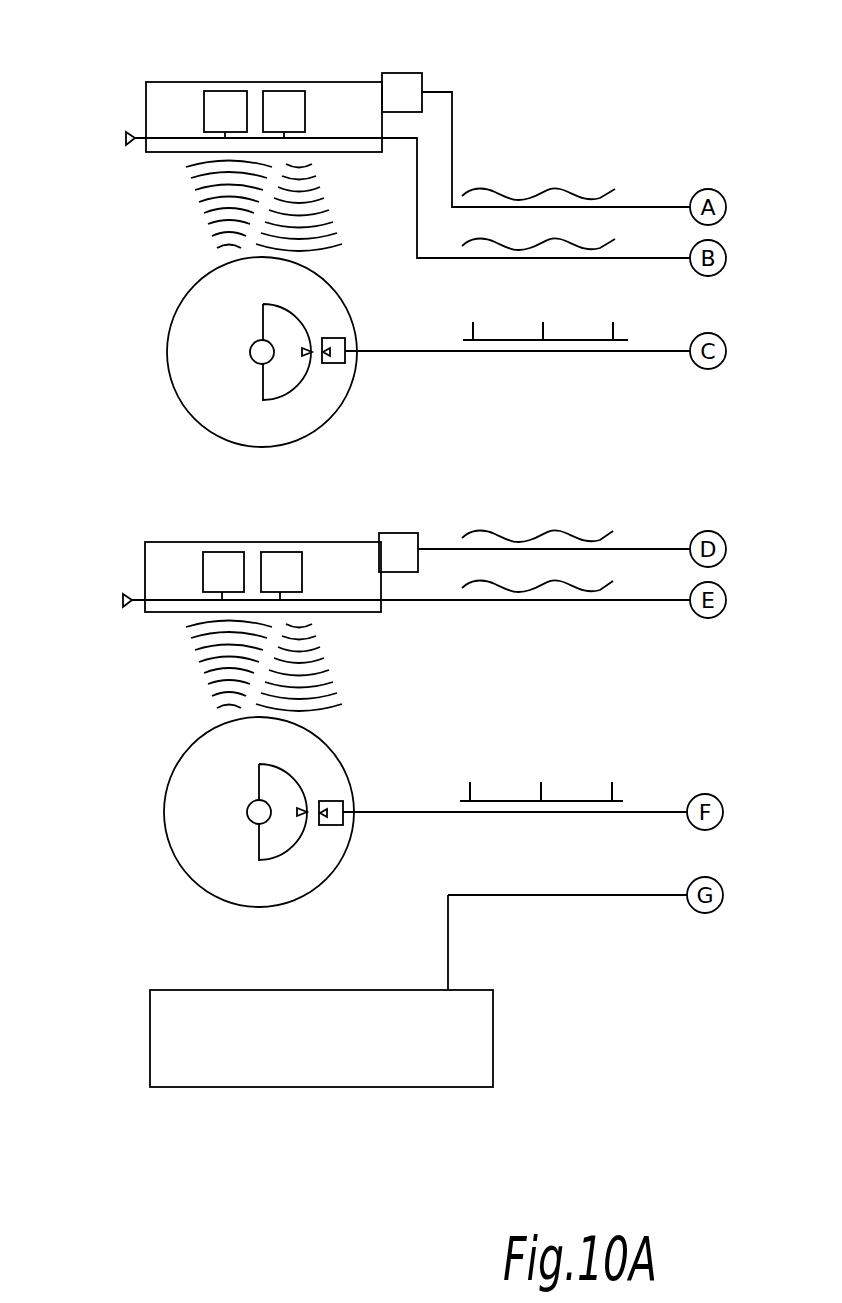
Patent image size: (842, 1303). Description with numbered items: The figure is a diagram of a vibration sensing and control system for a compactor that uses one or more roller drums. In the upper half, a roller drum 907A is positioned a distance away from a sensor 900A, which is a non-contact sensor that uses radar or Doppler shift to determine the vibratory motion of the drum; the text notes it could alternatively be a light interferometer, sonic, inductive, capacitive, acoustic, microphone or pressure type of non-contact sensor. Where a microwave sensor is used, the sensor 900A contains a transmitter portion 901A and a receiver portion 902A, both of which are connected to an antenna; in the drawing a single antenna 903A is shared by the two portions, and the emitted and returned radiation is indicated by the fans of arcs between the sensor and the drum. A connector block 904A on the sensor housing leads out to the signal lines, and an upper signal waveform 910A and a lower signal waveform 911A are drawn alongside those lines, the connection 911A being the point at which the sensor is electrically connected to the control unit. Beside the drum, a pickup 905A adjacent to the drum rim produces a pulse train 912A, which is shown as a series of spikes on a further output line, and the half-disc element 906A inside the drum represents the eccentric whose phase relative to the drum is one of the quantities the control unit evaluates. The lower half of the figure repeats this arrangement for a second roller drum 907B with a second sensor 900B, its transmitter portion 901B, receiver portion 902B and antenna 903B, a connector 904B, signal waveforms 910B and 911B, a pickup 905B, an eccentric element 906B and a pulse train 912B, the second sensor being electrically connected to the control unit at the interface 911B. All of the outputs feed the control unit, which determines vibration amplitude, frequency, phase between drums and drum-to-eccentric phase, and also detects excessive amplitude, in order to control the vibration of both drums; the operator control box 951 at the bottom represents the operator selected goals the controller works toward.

The sensor 900A is at (146, 107).
The transmitter portion 901A is at (220, 91).
The receiver portion 902A is at (283, 91).
The antenna 903A is at (126, 147).
The first connector 904A is at (410, 73).
The first rotary encoder pickup 905A is at (333, 338).
The first rotating disc / paddle 906A is at (268, 382).
The roller drum 907A is at (347, 390).
The first transmit signal 910A is at (553, 188).
The connection 911A is at (553, 240).
The first pulse train signal 912A is at (603, 338).
The second sensor 900B is at (211, 577).
The second transmitter (TX) 901B is at (177, 550).
The second receiver (RX) 902B is at (313, 545).
The second output line with arrow 903B is at (202, 618).
The second connector 904B is at (435, 527).
The second rotary encoder pickup 905B is at (368, 783).
The second rotating disc / paddle 906B is at (207, 829).
The second roller drum 907B is at (302, 812).
The second transmit signal 910B is at (548, 504).
The interface 911B is at (595, 543).
The second pulse train signal 912B is at (572, 771).
The operator control 951 is at (480, 990).